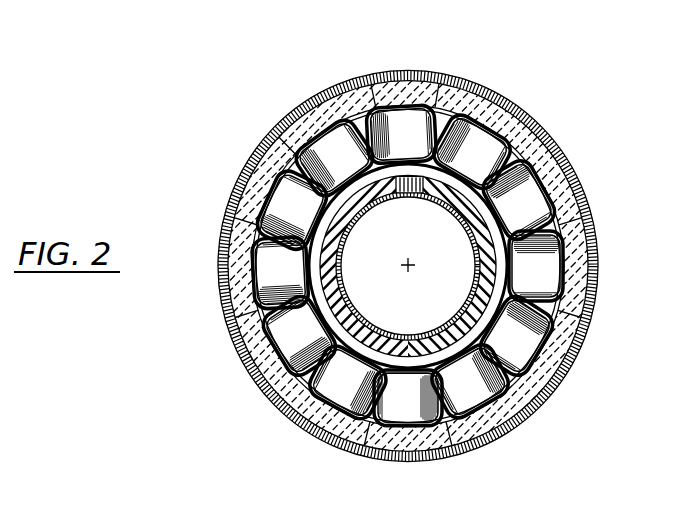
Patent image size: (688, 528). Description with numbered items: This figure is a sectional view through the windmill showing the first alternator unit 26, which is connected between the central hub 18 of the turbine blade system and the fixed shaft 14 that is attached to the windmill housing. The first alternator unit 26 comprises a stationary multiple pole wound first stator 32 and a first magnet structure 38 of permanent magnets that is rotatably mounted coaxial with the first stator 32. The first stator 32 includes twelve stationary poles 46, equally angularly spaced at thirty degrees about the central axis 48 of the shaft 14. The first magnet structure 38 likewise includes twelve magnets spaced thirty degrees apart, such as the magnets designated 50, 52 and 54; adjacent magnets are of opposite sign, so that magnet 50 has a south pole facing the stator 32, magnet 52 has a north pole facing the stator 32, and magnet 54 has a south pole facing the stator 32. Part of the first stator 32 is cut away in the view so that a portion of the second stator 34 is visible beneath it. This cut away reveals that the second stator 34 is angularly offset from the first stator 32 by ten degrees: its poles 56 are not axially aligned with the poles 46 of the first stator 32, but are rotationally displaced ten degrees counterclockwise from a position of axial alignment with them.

The fixed shaft 14 is at (373, 327).
The central hub 18 is at (597, 232).
The first alternator unit 26 is at (590, 184).
The first stator 32 is at (507, 122).
The second stator 34 is at (305, 170).
The first magnet structure 38 is at (548, 166).
The stationary poles 46 is at (415, 132).
The central axis 48 is at (410, 260).
The magnet 50 is at (262, 370).
The magnet 52 is at (327, 432).
The magnet 54 is at (440, 438).
The poles 56 is at (307, 160).